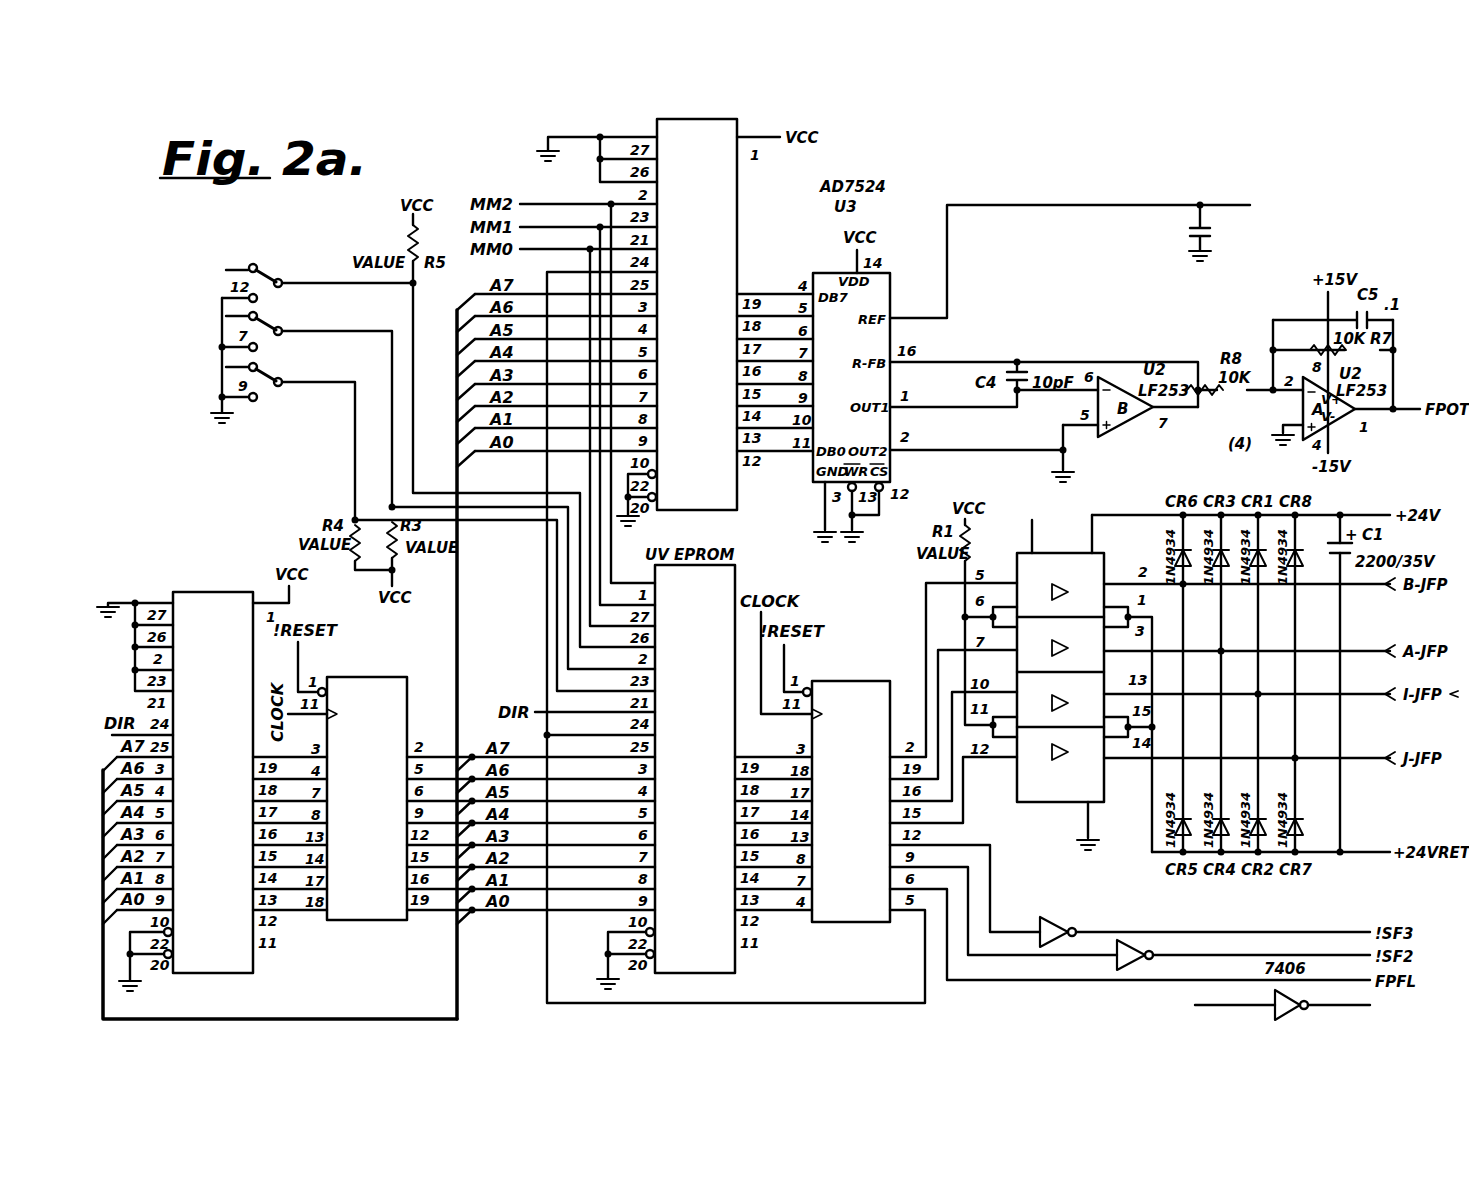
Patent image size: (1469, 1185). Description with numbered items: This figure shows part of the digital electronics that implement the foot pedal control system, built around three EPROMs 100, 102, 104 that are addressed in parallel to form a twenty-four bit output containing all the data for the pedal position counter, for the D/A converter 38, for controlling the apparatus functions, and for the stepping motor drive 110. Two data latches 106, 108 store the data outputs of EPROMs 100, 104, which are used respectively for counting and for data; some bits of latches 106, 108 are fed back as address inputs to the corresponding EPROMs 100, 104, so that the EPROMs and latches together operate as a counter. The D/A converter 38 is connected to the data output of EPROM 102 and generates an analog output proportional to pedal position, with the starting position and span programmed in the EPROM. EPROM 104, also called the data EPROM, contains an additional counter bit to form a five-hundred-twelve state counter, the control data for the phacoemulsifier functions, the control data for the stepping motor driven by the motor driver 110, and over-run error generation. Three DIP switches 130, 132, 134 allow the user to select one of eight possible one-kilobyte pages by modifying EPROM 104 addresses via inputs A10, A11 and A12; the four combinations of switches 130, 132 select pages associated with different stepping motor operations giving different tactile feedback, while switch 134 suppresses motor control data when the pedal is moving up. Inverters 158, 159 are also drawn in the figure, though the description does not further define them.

The D/A converter 38 is at (1024, 186).
The EPROM 100 is at (228, 592).
The EPROM 102 is at (737, 495).
The data EPROM 104 is at (735, 568).
The data latch 106 is at (398, 674).
The data latch 108 is at (884, 681).
The stepping motor drive 110 is at (1120, 833).
The DIP switch 130 is at (280, 276).
The DIP switch 132 is at (280, 325).
The DIP switch 134 is at (272, 398).
The inverters A and B (7406) 158 is at (1115, 954).
The inverter D (7406) 159 is at (1272, 1012).